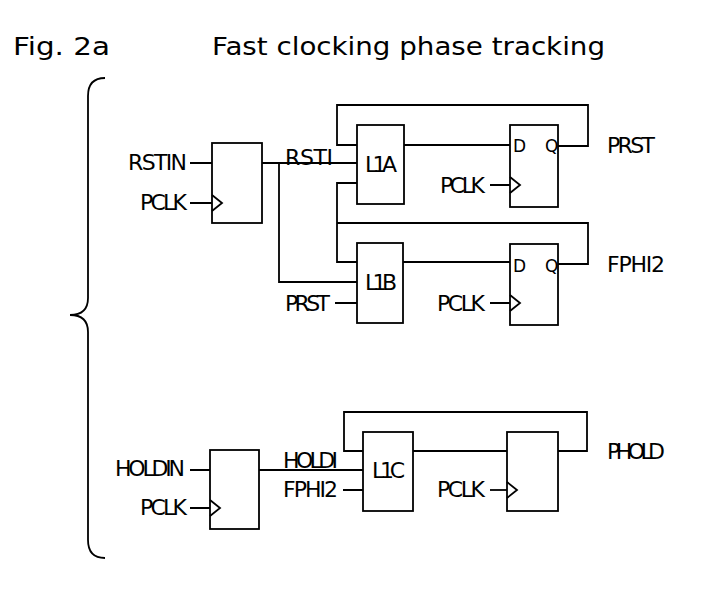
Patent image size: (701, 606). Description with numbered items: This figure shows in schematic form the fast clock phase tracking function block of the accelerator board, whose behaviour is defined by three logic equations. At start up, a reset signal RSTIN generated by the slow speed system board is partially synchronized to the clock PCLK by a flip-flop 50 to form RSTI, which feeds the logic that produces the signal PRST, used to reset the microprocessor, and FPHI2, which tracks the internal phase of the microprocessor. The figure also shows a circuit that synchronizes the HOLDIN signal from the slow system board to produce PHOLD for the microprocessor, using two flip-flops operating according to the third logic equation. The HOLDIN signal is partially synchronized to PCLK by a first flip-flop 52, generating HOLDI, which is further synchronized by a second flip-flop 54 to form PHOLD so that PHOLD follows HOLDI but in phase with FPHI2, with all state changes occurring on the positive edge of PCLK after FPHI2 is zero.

The flip-flop 50 is at (237, 183).
The first flip-flop 52 is at (234, 489).
The second flip-flop 54 is at (532, 471).